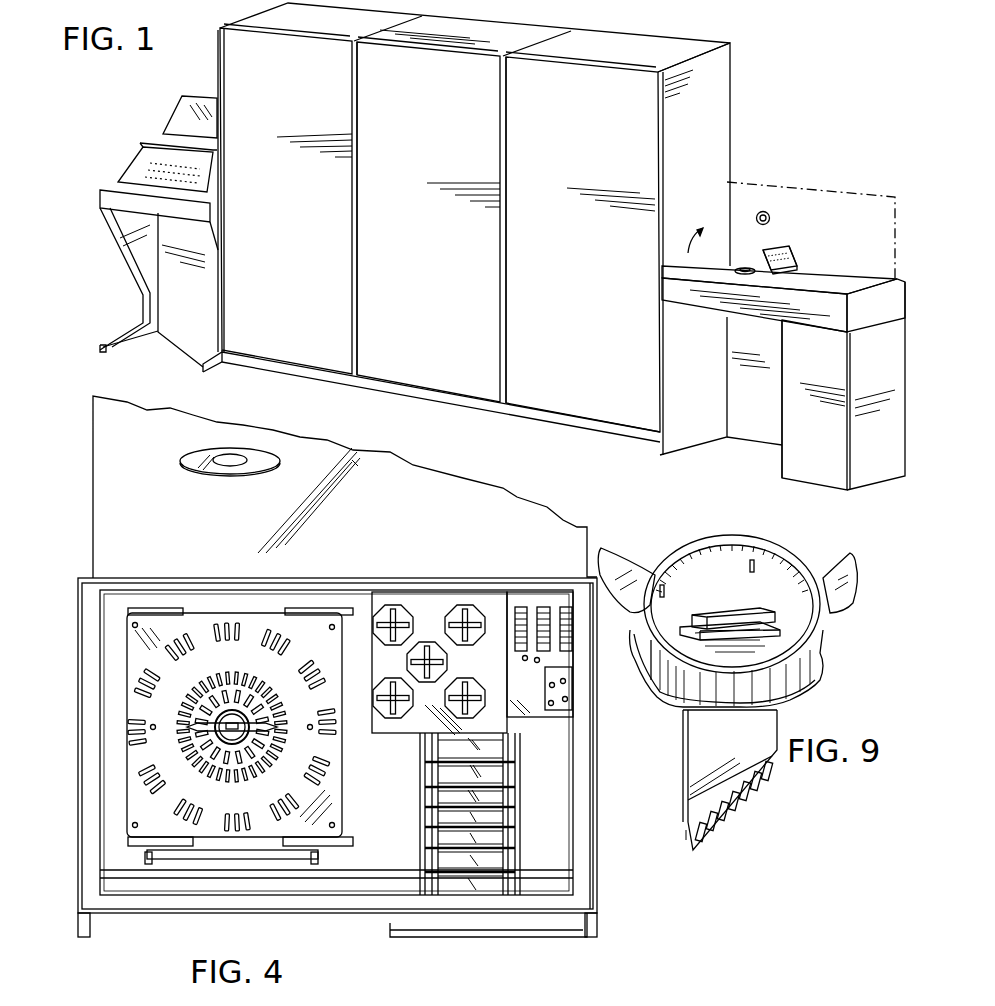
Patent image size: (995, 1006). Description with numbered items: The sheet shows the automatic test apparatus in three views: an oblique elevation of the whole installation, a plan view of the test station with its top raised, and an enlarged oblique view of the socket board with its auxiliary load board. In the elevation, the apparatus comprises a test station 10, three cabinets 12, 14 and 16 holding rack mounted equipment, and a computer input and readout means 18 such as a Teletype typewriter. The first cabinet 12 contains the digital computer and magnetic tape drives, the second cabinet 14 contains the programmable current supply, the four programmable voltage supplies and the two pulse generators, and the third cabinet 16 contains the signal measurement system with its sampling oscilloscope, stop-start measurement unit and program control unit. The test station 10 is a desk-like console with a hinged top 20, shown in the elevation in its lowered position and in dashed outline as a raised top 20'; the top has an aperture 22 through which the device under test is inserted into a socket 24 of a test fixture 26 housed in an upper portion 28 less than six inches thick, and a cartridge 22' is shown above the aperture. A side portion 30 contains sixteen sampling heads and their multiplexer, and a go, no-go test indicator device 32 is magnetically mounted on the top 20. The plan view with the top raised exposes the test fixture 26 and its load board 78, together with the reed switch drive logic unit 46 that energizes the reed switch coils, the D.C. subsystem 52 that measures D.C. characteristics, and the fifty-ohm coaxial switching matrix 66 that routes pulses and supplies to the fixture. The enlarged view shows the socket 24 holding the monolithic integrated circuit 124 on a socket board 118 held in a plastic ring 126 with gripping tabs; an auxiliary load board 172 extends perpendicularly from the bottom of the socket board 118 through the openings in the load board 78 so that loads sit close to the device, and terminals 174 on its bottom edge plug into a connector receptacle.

In FIG. 1, the test station 10 is at (740, 447).
In FIG. 1, the first cabinet 12 is at (290, 330).
In FIG. 1, the second cabinet 14 is at (418, 335).
In FIG. 1, the third cabinet 16 is at (565, 383).
In FIG. 1, the computer input and readout means 18 is at (143, 136).
In FIG. 1, the hinged top 20 is at (783, 287).
In FIG. 4, the hinged top 20 is at (323, 487).
In FIG. 1, the back panel 20' is at (811, 218).
In FIG. 1, the aperture 22 is at (748, 251).
In FIG. 4, the aperture 22 is at (220, 476).
In FIG. 1, the cartridge in raised position 22' is at (778, 189).
In FIG. 4, the socket 24 is at (213, 700).
In FIG. 9, the socket 24 is at (682, 628).
In FIG. 4, the test fixture 26 is at (352, 790).
In FIG. 1, the upper portion 28 is at (773, 318).
In FIG. 4, the upper portion 28 is at (113, 847).
In FIG. 1, the side portion 30 is at (837, 381).
In FIG. 4, the side portion 30 is at (462, 932).
In FIG. 1, the test indicator device 32 is at (790, 250).
In FIG. 4, the reed switch drive logic unit 46 is at (427, 855).
In FIG. 4, the D.C. subsystem unit 52 is at (550, 600).
In FIG. 4, the coaxial cable switching matrix 66 is at (436, 602).
In FIG. 4, the load board 78 is at (333, 742).
In FIG. 9, the load board 78 is at (803, 687).
In FIG. 9, the socket board 118 is at (785, 627).
In FIG. 9, the monolithic semiconductor integrated circuit 124 is at (730, 612).
In FIG. 9, the plastic ring 126 is at (790, 548).
In FIG. 9, the auxiliary load board 172 is at (685, 748).
In FIG. 9, the terminals 174 is at (730, 812).